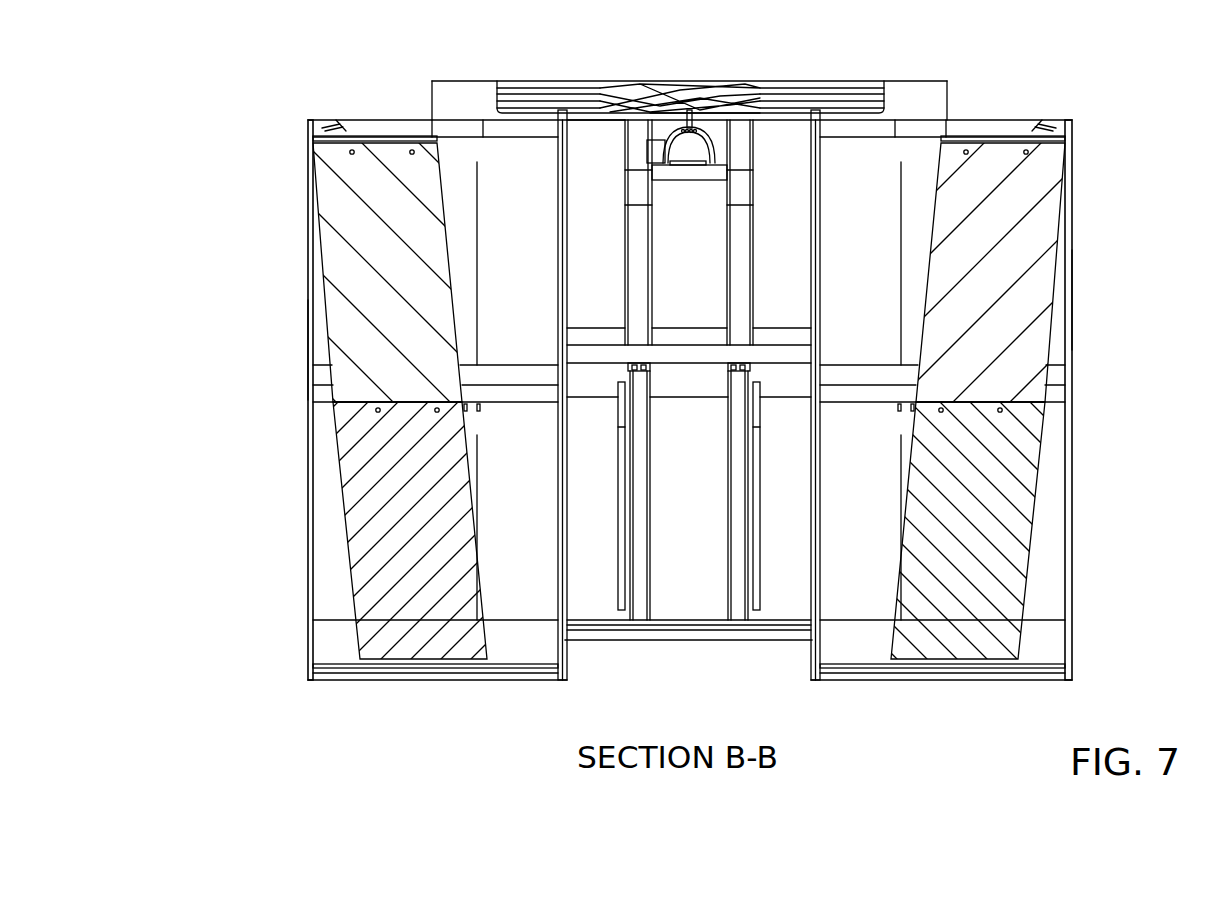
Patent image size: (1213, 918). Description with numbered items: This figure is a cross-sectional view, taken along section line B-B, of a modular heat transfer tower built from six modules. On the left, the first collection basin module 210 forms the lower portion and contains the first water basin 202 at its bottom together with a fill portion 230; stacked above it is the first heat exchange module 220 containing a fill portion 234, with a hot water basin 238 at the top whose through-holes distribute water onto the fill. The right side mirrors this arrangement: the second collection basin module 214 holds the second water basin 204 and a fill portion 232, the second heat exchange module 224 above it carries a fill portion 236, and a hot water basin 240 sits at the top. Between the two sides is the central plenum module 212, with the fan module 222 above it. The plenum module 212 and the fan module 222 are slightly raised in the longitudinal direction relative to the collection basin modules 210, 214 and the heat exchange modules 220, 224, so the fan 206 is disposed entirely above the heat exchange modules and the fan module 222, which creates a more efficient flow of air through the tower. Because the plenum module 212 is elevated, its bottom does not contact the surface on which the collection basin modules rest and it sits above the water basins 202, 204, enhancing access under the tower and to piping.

The first water basin 202 is at (323, 645).
The second water basin 204 is at (1045, 642).
The fan 206 is at (790, 113).
The first collection basin module 210 is at (308, 597).
The plenum module 212 is at (645, 640).
The second collection basin module 214 is at (1070, 557).
The first heat exchange module 220 is at (307, 343).
The fan module 222 is at (600, 132).
The second heat exchange module 224 is at (1072, 300).
The fill portion 230 is at (380, 497).
The fill portion 232 is at (1000, 512).
The fill portion 234 is at (345, 237).
The fill portion 236 is at (1030, 232).
The hot water basin 238 is at (348, 127).
The hot water basin 240 is at (1053, 125).